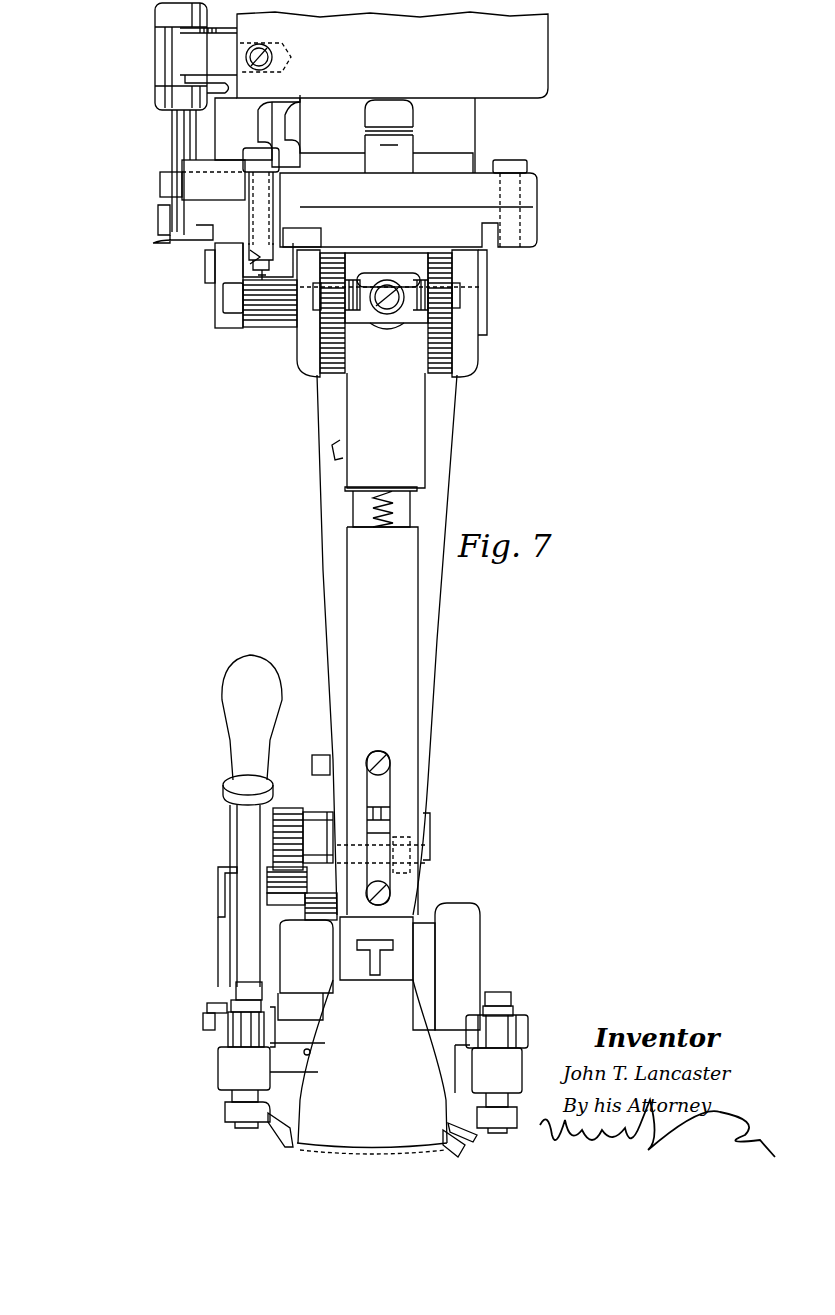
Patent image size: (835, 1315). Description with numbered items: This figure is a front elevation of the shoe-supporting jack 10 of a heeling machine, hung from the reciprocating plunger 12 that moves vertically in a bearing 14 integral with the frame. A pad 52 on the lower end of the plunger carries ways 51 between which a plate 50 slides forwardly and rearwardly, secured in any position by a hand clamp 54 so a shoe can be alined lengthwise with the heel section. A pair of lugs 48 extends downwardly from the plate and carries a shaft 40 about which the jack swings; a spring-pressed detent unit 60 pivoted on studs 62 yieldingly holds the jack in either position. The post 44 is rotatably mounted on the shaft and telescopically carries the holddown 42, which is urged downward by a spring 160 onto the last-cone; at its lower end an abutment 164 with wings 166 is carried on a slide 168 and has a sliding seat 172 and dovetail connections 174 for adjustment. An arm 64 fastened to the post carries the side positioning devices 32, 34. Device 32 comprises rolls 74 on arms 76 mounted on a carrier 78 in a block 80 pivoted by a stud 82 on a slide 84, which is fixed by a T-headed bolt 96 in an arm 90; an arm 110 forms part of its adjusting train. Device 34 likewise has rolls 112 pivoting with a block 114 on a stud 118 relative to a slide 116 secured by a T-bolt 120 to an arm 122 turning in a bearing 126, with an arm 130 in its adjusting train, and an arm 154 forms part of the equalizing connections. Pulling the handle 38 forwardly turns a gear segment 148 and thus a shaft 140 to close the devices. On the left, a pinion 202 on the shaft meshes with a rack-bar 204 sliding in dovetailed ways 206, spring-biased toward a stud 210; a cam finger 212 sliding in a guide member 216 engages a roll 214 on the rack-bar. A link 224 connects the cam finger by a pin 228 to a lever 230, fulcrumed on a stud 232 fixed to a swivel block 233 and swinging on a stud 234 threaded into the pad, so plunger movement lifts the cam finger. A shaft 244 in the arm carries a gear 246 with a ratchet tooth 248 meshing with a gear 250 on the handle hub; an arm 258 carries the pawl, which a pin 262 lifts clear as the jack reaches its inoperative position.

The jack 10 is at (463, 743).
The plunger 12 is at (475, 118).
The bearing 14 is at (540, 42).
The positioning device 32 is at (476, 1153).
The positioning device 34 is at (246, 1144).
The handle 38 is at (225, 690).
The shaft 40 is at (485, 275).
The holddown 42 is at (410, 604).
The post 44 is at (410, 410).
The lugs 48 is at (310, 362).
The plate 50 is at (482, 215).
The ways 51 is at (290, 230).
The pad 52 is at (525, 185).
The hand clamp 54 is at (393, 107).
The spring-pressed detent unit 60 is at (362, 320).
The studs 62 is at (318, 312).
The arm 64 is at (326, 506).
The frusto-conical rolls 74 is at (445, 1138).
The arms 76 is at (472, 1130).
The carrier 78 is at (495, 1130).
The block 80 is at (478, 1082).
The stud 82 is at (505, 1010).
The slide 84 is at (500, 1025).
The arm 90 is at (465, 932).
The T-headed bolt 96 is at (500, 992).
The arm 110 is at (462, 1060).
The frusto-conical rolls 112 is at (292, 1147).
The block 114 is at (225, 1065).
The slide 116 is at (235, 1025).
The stud 118 is at (243, 1005).
The T-bolt 120 is at (248, 990).
The arm 122 is at (222, 1004).
The bearing 126 is at (325, 997).
The arm 130 is at (293, 1060).
The shaft 140 is at (205, 1020).
The gear segment 148 is at (228, 940).
The arm 154 is at (330, 937).
The spring 160 is at (395, 505).
The abutment 164 is at (408, 908).
The wings 166 is at (418, 975).
The slide 168 is at (400, 895).
The sliding seat 172 is at (375, 972).
The dovetail connections 174 is at (310, 900).
The pinion 202 is at (272, 318).
The rack-bar 204 is at (300, 272).
The dovetailed ways 206 is at (250, 258).
The stud 210 is at (268, 268).
The cam finger 212 is at (220, 115).
The roll 214 is at (210, 284).
The guide member 216 is at (255, 108).
The link 224 is at (195, 145).
The pin 228 is at (160, 223).
The lever 230 is at (240, 148).
The stud 232 is at (178, 132).
The block 233 is at (170, 38).
The stud 234 is at (182, 186).
The shaft 244 is at (452, 820).
The gear 246 is at (275, 870).
The ratchet tooth 248 is at (285, 808).
The gear 250 is at (270, 895).
The arm 258 is at (318, 800).
The pin 262 is at (318, 762).